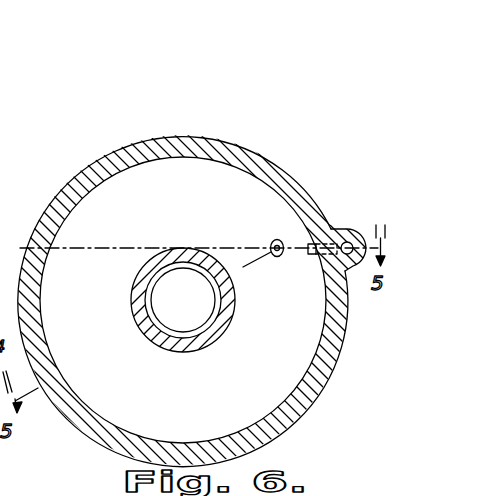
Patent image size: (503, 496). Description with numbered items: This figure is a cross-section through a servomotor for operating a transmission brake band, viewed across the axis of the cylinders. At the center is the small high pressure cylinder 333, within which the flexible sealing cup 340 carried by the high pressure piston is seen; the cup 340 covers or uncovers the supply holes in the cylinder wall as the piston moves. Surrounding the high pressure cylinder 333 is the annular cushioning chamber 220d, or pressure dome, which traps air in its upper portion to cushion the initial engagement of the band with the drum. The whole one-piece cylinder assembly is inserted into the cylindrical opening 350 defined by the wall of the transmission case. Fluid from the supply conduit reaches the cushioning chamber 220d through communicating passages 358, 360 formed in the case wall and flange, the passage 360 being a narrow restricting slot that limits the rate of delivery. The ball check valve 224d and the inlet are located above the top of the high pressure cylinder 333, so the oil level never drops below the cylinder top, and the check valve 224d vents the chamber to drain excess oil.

The cushioning chamber 220d is at (143, 179).
The cylindrical opening 350 is at (237, 151).
The check valve 224d is at (272, 242).
The passage 358 is at (347, 241).
The restricting slot 360 is at (308, 256).
The flexible sealing cup 340 is at (160, 301).
The high pressure cylinder 333 is at (220, 324).